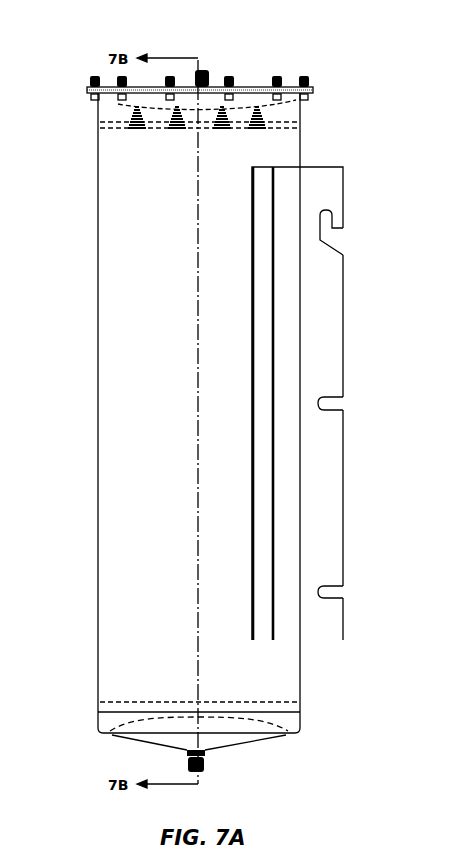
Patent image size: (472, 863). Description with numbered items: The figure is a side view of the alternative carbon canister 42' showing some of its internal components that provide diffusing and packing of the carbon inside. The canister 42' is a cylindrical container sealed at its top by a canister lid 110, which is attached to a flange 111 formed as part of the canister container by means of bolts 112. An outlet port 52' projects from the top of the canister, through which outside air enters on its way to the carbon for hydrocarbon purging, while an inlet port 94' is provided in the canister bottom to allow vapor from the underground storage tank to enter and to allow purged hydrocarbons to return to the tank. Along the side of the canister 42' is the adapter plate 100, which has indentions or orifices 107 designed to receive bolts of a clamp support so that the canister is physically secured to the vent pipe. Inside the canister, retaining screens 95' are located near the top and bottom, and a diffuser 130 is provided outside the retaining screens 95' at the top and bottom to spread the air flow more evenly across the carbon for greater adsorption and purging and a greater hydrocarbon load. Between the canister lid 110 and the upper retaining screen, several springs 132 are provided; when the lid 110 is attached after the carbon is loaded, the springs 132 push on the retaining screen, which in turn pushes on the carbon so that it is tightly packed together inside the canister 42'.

The alternative carbon canister 42' is at (162, 422).
The outlet port 52' is at (230, 53).
The inlet port 94' is at (231, 777).
The retaining screens 95' is at (244, 412).
The adapter plate 100 is at (343, 335).
The indentions or orifices 107 is at (328, 233).
The canister lid 110 is at (250, 86).
The flange 111 is at (101, 98).
The bolts 112 is at (310, 78).
The diffuser 130 is at (132, 126).
The springs 132 is at (188, 112).